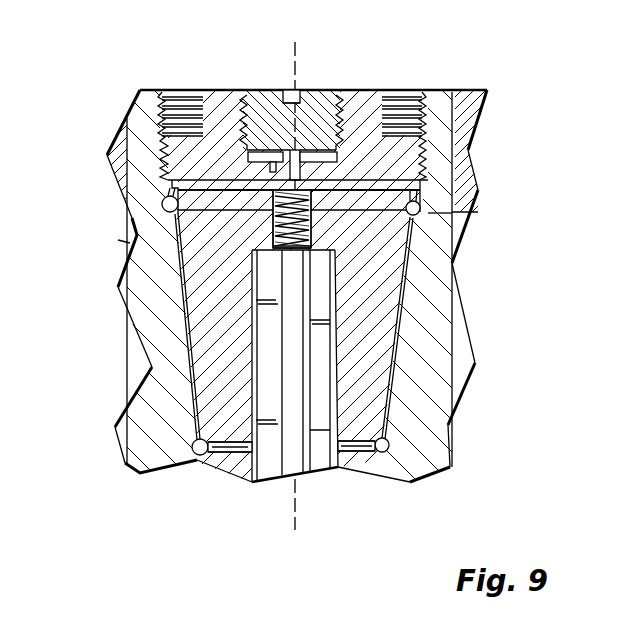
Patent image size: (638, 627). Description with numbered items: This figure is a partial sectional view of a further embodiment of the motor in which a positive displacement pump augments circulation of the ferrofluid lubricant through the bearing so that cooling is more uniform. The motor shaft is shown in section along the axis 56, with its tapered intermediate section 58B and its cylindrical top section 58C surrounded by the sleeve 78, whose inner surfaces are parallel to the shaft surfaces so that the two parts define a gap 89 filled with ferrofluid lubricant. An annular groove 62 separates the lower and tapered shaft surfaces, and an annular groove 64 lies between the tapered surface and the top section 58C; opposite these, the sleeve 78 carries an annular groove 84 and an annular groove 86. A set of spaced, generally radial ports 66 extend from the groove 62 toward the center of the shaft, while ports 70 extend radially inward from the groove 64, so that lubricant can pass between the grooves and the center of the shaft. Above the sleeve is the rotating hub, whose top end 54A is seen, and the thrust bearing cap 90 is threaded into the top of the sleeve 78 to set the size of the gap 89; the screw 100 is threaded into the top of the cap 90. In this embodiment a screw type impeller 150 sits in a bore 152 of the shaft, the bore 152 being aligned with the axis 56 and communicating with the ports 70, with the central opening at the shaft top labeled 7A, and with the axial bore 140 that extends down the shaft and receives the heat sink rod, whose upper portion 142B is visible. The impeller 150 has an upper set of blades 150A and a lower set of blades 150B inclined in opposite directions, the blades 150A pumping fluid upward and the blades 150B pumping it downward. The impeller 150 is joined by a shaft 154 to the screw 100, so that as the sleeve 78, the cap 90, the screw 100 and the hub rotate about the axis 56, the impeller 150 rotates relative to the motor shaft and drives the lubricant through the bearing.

The axis 56 is at (293, 58).
The top end 54A is at (122, 136).
The sleeve 78 is at (128, 243).
The annular groove 86 is at (478, 213).
The thrust bearing cap 90 is at (366, 90).
The screw 100 is at (311, 90).
The shaft 154 is at (291, 120).
The stem 7A is at (326, 168).
The ports 70 is at (215, 205).
The screw type impeller 150 is at (289, 219).
The upper set of impeller blades 150A is at (312, 192).
The lower set of impeller blades 150B is at (312, 240).
The bore 152 is at (311, 224).
The axial bore 140 is at (347, 366).
The upper portion 142B is at (318, 383).
The tapered intermediate section 58B is at (200, 320).
The cylindrical top section 58C is at (162, 204).
The gap 89 is at (183, 298).
The annular groove 64 is at (420, 206).
The annular groove 84 is at (191, 448).
The annular groove 62 is at (390, 446).
The ports 66 is at (226, 456).